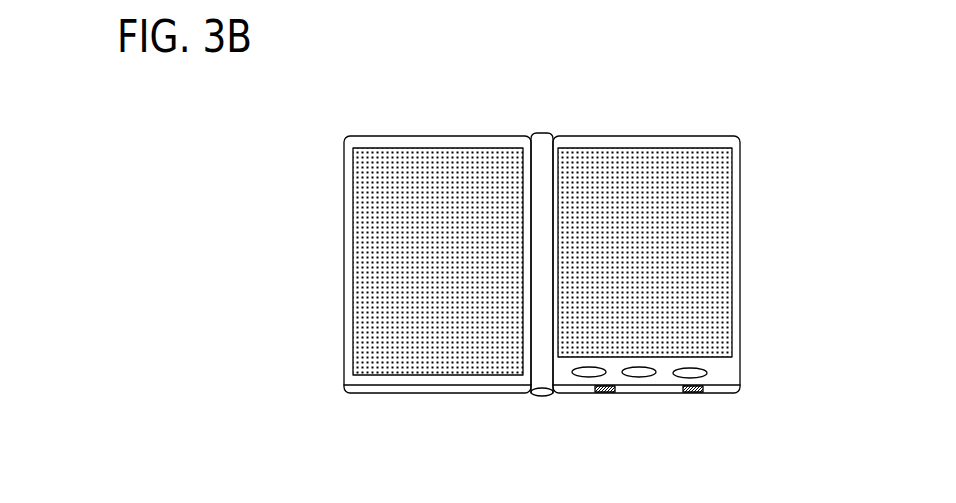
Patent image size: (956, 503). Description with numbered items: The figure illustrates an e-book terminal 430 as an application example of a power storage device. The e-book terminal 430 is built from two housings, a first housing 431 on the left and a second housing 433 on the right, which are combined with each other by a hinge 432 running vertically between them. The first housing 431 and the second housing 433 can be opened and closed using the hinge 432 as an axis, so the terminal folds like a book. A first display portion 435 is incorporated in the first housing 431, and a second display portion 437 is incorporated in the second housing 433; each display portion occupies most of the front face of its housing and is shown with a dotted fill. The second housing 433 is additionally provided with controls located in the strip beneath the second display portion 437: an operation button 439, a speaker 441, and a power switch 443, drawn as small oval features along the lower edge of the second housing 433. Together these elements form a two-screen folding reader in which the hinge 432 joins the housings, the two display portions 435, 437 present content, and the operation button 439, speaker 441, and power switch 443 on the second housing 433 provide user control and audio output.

The e-book terminal 430 is at (557, 126).
The first housing 431 is at (349, 202).
The hinge 432 is at (546, 376).
The second housing 433 is at (736, 202).
The first display portion 435 is at (371, 279).
The second display portion 437 is at (722, 278).
The operation button 439 is at (676, 376).
The speaker 441 is at (599, 393).
The power switch 443 is at (681, 395).